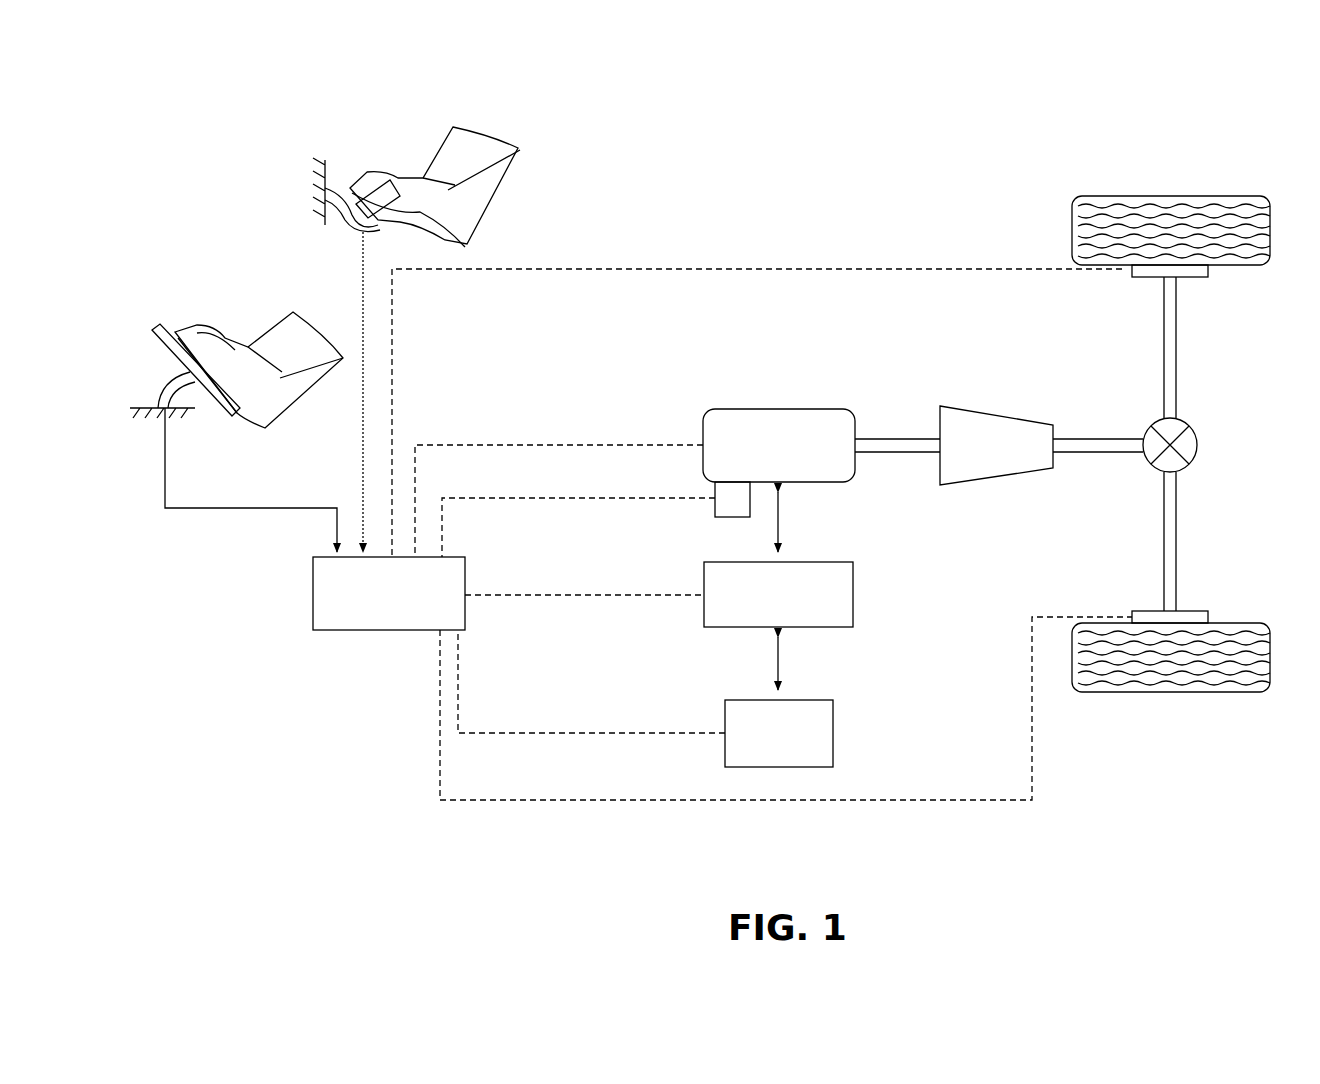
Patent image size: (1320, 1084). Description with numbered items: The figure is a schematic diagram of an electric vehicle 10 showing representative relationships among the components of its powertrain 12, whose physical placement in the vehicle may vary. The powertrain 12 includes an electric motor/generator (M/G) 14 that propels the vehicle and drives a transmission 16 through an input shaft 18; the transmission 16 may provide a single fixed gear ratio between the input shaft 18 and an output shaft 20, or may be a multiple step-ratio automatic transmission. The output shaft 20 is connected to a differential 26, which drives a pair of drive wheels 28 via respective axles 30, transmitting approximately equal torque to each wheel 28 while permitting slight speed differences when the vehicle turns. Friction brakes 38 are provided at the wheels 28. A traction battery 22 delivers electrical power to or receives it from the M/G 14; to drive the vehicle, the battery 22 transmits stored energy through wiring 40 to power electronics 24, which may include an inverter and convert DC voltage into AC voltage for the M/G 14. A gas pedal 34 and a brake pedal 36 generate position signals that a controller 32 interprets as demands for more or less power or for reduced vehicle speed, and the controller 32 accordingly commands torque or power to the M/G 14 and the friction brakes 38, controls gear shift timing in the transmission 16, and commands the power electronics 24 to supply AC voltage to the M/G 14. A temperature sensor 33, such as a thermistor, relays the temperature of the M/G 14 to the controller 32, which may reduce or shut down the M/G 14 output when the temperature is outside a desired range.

The electric vehicle 10 is at (962, 104).
The powertrain 12 is at (830, 331).
The electric motor/generator (M/G) 14 is at (703, 430).
The transmission (gearbox) 16 is at (995, 405).
The input shaft 18 is at (902, 437).
The output shaft 20 is at (1088, 437).
The traction battery 22 is at (725, 720).
The power electronics 24 is at (820, 562).
The differential 26 is at (1198, 448).
The drive wheels 28 is at (1172, 196).
The axles 30 is at (1180, 343).
The controller 32 is at (313, 590).
The temperature sensor 33 is at (730, 517).
The gas pedal 34 is at (222, 300).
The brake pedal 36 is at (400, 134).
The friction brakes 38 is at (1212, 272).
The wiring 40 is at (778, 676).